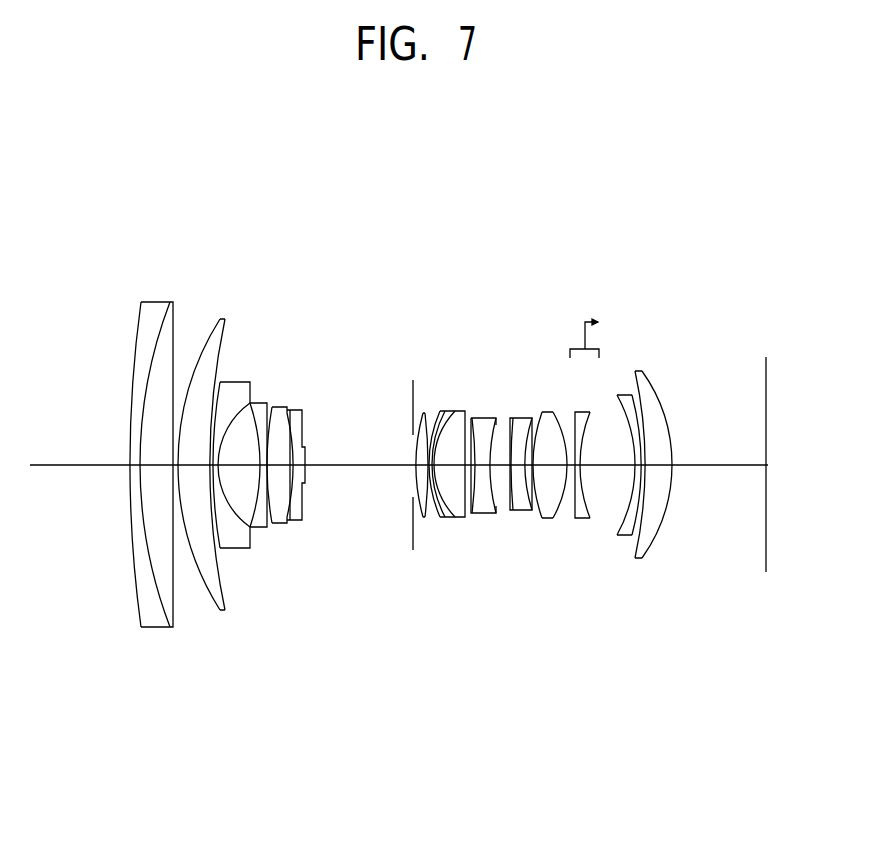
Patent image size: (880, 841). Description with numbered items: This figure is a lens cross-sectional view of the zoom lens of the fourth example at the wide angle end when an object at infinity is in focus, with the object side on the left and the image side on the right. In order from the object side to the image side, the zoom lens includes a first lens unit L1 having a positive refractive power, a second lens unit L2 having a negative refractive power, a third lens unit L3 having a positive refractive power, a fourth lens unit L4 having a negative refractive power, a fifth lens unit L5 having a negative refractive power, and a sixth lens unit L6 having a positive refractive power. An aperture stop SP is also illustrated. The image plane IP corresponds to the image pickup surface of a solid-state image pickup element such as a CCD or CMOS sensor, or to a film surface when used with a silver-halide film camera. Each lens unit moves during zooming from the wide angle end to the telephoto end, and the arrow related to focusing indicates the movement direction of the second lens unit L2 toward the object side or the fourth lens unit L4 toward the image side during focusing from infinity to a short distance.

The first lens unit L1 is at (124, 767).
The second lens unit L2 is at (242, 767).
The third lens unit L3 is at (572, 626).
The fourth lens unit L4 is at (496, 769).
The fifth lens unit L5 is at (541, 769).
The sixth lens unit L6 is at (604, 769).
The aperture stop SP is at (421, 388).
The image plane IP is at (767, 363).